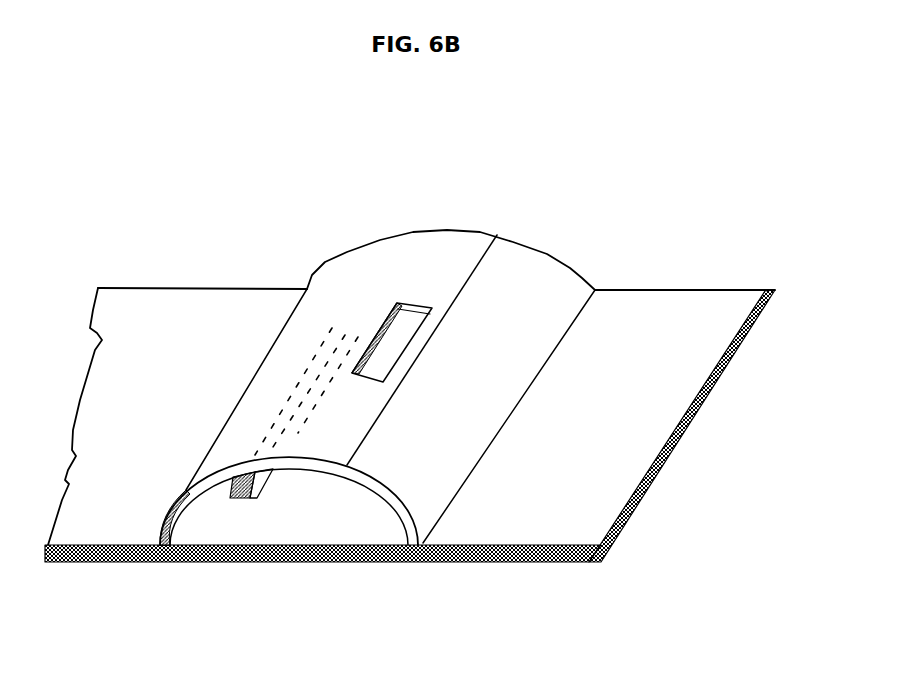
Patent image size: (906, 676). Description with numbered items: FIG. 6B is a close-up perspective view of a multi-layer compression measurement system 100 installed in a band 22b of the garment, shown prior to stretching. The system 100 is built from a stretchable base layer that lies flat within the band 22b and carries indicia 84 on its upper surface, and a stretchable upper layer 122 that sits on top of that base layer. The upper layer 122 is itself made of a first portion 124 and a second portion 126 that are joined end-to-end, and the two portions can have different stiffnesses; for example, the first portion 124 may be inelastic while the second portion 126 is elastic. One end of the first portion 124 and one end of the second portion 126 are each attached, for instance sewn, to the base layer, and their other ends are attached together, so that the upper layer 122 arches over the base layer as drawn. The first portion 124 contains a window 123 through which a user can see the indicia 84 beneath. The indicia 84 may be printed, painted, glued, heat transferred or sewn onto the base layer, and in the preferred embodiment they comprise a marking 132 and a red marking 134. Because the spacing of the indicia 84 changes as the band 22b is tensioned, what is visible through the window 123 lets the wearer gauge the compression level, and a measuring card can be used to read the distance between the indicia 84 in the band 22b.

The multi-layer compression measurement system 100 is at (260, 164).
The band 22b is at (663, 318).
The stretchable upper layer 122 is at (421, 198).
The window 123 is at (402, 328).
The first portion 124 is at (327, 298).
The second portion 126 is at (537, 278).
The marking 132 is at (250, 498).
The red marking 134 is at (230, 498).
The indicia 84 is at (280, 497).